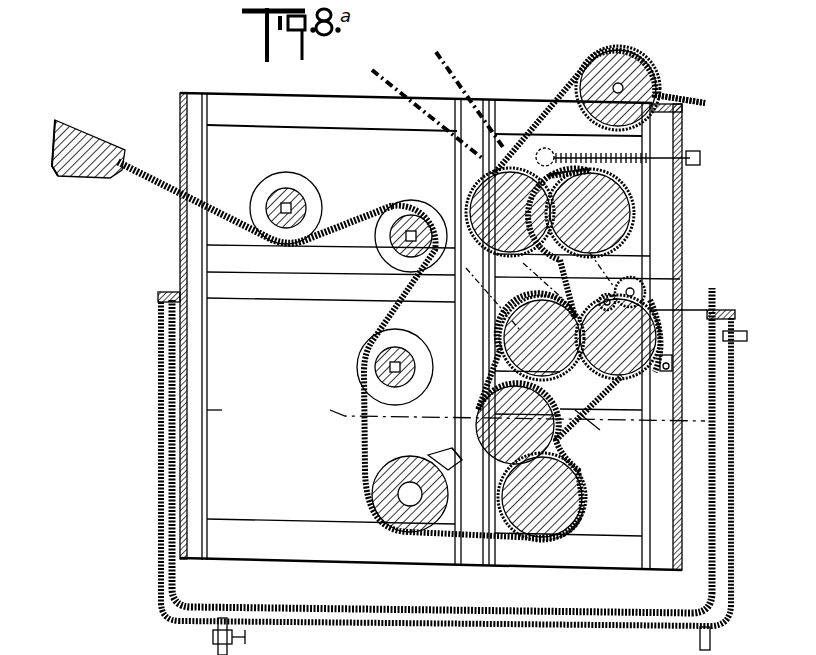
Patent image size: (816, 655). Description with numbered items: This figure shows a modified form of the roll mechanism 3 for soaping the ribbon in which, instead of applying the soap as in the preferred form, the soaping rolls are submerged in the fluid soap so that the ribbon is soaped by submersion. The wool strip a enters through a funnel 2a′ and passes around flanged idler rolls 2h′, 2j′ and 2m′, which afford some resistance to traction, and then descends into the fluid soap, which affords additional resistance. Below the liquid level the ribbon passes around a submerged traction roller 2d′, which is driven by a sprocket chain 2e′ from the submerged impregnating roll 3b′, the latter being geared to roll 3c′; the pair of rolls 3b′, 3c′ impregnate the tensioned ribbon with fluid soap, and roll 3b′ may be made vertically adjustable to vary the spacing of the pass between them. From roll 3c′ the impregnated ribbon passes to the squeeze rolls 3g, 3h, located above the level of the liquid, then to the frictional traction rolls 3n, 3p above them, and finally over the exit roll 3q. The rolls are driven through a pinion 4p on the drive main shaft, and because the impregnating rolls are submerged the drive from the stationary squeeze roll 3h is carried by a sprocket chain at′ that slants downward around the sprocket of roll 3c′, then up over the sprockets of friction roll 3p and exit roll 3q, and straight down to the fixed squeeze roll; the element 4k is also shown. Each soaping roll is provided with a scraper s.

The roll mechanism 3 is at (160, 337).
The funnel 2a′ is at (108, 150).
The web a is at (146, 192).
The flanged idler roll 2h′ is at (296, 205).
The flanged idler roll 2j′ is at (398, 248).
The flanged idler roll 2m′ is at (372, 362).
The submerged traction roller 2d′ is at (385, 492).
The sprocket chain 2e′ is at (440, 456).
The frictional traction roll 3p is at (482, 196).
The frictional traction roll 3n is at (632, 212).
The exit roll 3q is at (640, 70).
The squeeze roll 3g is at (503, 330).
The squeeze roll 3h is at (640, 342).
The impregnating roll 3c′ is at (540, 400).
The impregnating roll 3b′ is at (575, 493).
The pinion 4p is at (615, 292).
The gear 4k is at (655, 290).
The web portion at′ is at (593, 429).
The scraper s is at (585, 282).